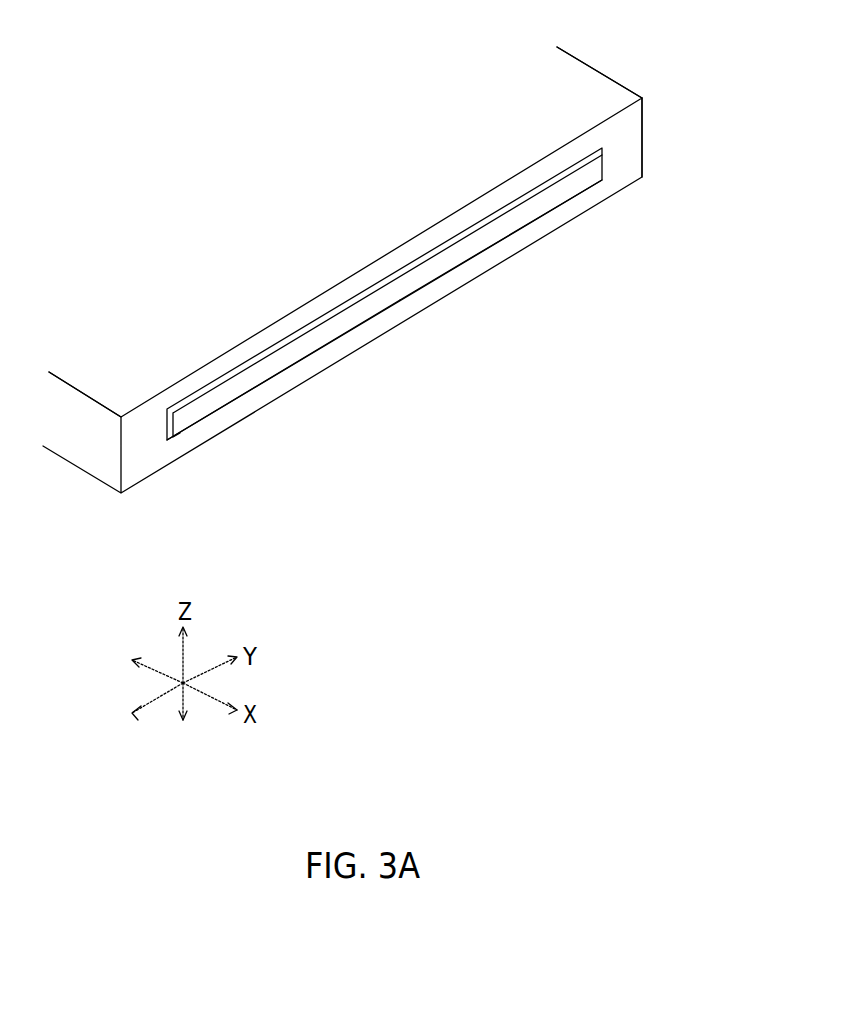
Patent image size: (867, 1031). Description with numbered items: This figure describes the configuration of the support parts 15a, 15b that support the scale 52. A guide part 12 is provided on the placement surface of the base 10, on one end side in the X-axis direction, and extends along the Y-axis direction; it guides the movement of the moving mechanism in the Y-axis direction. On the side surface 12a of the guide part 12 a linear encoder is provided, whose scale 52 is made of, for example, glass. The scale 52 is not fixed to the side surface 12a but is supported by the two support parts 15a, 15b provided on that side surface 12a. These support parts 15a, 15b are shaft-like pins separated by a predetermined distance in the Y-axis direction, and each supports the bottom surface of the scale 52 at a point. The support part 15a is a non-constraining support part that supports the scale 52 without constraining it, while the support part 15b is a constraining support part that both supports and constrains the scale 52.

The base 10 is at (73, 487).
The guide part 12 is at (593, 70).
The side surface of the guide part 12a is at (628, 152).
The scale 52 is at (375, 295).
The support part 15a is at (282, 380).
The support part 15b is at (500, 248).